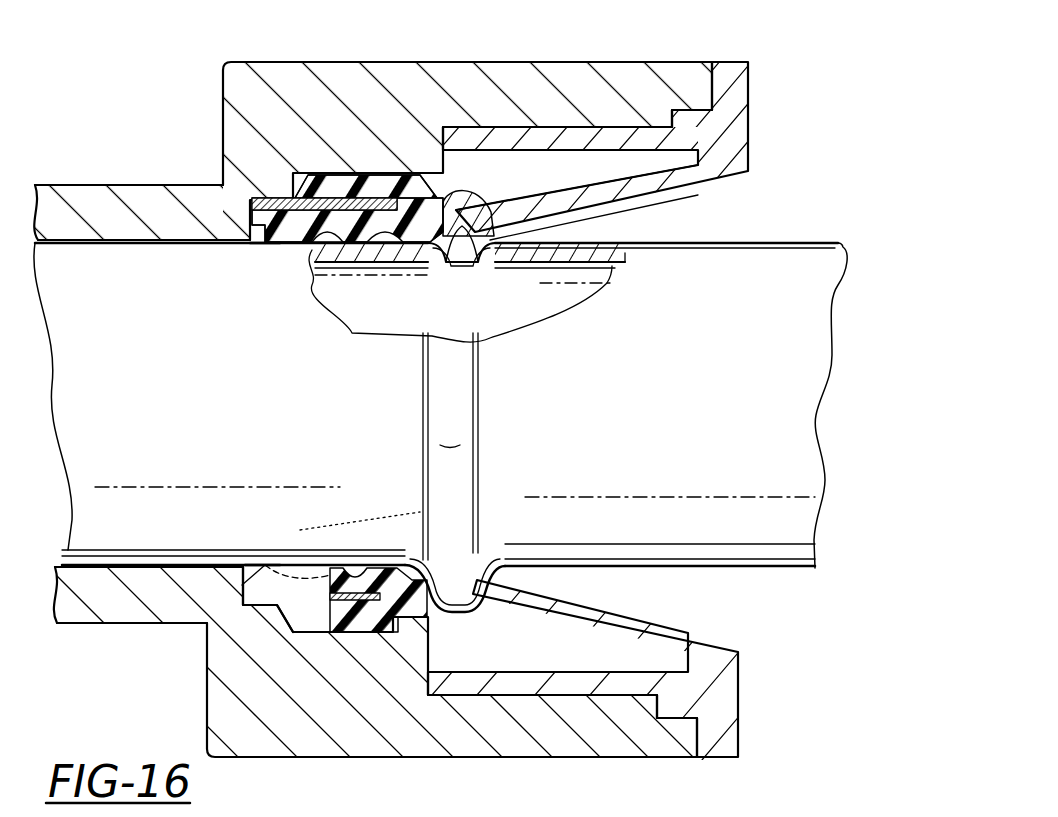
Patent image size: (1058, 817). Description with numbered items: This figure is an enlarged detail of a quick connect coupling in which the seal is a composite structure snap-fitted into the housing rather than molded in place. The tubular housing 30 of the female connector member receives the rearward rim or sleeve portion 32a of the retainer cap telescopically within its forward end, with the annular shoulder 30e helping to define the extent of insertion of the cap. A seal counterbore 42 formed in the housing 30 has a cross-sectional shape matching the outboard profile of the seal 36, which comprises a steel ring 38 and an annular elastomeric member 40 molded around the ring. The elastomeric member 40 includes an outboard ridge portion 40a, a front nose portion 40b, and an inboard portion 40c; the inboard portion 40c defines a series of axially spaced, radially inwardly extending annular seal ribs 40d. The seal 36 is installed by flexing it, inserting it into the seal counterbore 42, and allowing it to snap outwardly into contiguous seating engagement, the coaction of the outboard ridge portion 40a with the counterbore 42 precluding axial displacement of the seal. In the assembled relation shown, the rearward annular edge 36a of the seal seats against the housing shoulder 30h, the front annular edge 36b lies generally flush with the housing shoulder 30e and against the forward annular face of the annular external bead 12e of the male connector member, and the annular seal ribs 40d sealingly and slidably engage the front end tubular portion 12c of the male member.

The front end tubular portion 12c is at (244, 418).
The annular external bead 12e is at (458, 409).
The tubular housing 30 is at (178, 644).
The annular shoulder 30e is at (435, 660).
The housing shoulder 30h is at (263, 243).
The rearward rim or sleeve portion 32a is at (537, 133).
The seal 36 is at (344, 269).
The rearward annular edge 36a is at (250, 205).
The front annular edge 36b is at (447, 597).
The steel ring 38 is at (363, 203).
The annular elastomeric member 40 is at (302, 183).
The outboard ridge portion 40a is at (342, 186).
The front nose portion 40b is at (443, 170).
The inboard portion 40c is at (380, 244).
The annular seal ribs 40d is at (293, 243).
The seal counterbore 42 is at (292, 620).